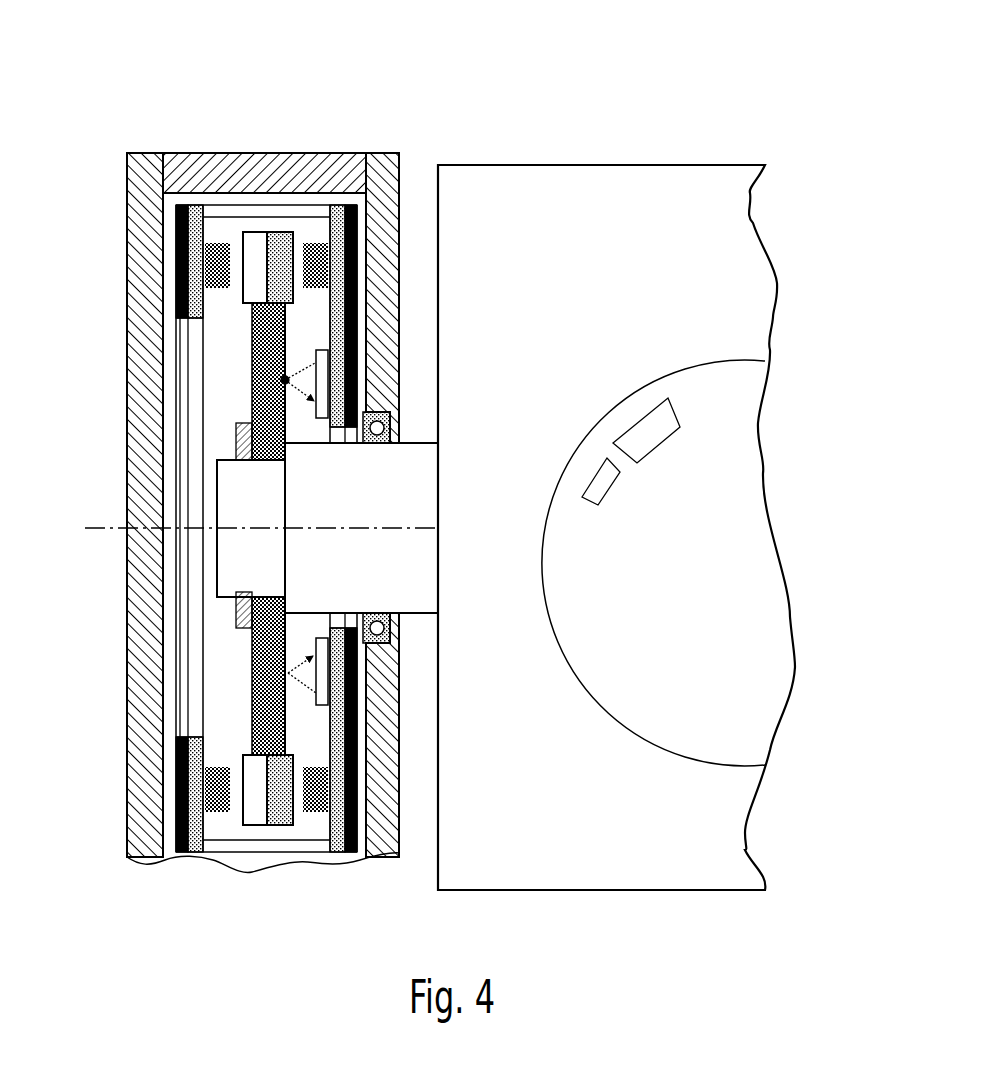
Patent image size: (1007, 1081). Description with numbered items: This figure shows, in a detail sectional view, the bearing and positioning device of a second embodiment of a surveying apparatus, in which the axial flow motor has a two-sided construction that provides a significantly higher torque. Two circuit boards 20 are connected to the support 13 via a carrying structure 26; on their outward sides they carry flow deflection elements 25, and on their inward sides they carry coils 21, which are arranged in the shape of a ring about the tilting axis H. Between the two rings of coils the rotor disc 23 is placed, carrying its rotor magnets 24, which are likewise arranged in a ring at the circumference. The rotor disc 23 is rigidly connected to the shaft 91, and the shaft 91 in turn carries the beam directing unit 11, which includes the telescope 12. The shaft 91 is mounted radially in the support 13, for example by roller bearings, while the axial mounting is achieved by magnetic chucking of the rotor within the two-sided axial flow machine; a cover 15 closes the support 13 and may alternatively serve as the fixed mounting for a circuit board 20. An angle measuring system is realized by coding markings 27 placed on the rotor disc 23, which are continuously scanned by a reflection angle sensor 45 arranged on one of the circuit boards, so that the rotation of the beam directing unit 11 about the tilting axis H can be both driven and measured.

The beam directing unit 11 is at (560, 203).
The telescope 12 is at (722, 437).
The support 13 is at (390, 858).
The cover 15 is at (145, 857).
The circuit board 20 is at (343, 217).
The coils 21 is at (315, 243).
The rotor disc 23 is at (252, 662).
The rotor magnets 24 is at (267, 798).
The flow deflection elements 25 is at (200, 509).
The carrying structure 26 is at (226, 843).
The coding markings 27 is at (285, 380).
The reflection angle sensor 45 is at (322, 420).
The shaft 91 is at (357, 582).
The tilting axis H is at (115, 528).